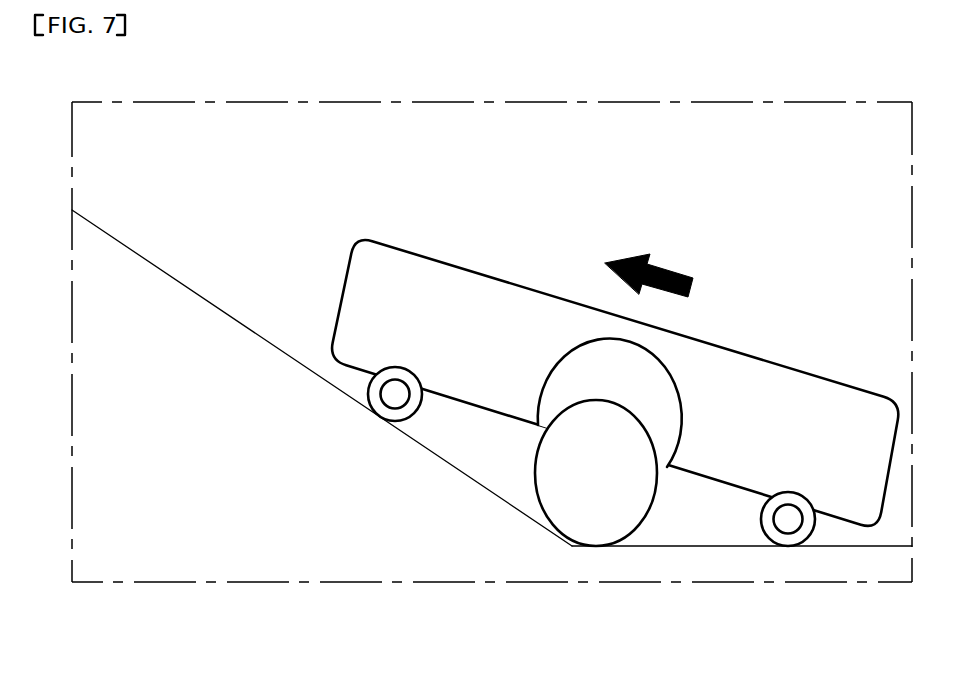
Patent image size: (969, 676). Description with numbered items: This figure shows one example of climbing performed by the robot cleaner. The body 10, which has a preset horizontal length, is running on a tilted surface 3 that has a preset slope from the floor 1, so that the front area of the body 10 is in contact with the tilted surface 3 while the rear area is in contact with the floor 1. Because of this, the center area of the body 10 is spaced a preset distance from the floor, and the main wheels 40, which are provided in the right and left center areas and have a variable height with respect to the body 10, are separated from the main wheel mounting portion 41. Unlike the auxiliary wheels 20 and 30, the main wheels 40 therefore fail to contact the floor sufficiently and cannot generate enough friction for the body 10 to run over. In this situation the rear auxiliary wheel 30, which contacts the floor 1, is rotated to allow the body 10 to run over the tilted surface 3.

The floor 1 is at (798, 568).
The tilted surface 3 is at (138, 254).
The body 10 is at (768, 403).
The auxiliary wheel 20 is at (410, 417).
The rear auxiliary wheel 30 is at (763, 523).
The main wheel 40 is at (638, 515).
The main wheel mounting portion 41 is at (567, 353).